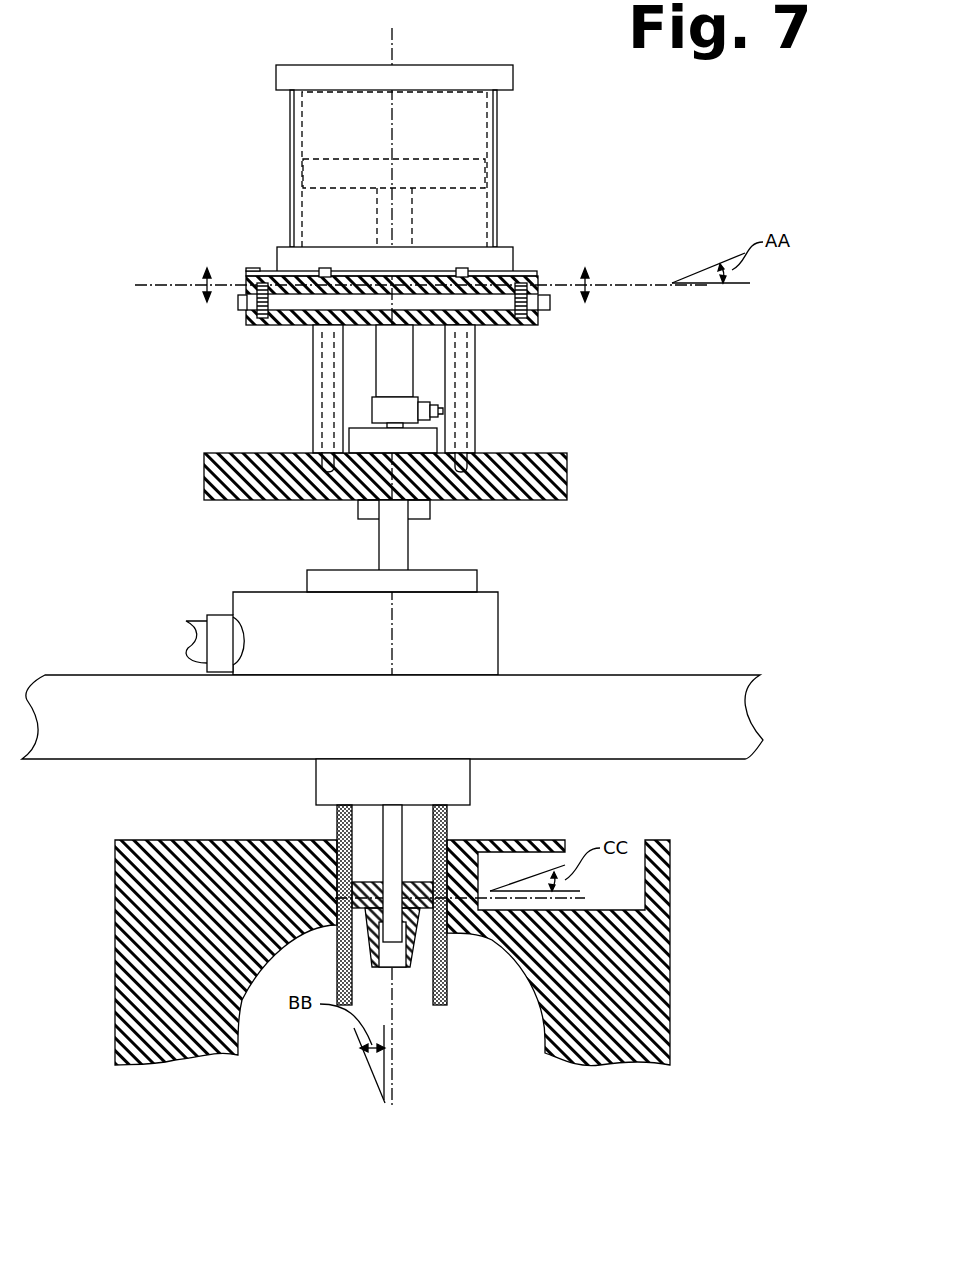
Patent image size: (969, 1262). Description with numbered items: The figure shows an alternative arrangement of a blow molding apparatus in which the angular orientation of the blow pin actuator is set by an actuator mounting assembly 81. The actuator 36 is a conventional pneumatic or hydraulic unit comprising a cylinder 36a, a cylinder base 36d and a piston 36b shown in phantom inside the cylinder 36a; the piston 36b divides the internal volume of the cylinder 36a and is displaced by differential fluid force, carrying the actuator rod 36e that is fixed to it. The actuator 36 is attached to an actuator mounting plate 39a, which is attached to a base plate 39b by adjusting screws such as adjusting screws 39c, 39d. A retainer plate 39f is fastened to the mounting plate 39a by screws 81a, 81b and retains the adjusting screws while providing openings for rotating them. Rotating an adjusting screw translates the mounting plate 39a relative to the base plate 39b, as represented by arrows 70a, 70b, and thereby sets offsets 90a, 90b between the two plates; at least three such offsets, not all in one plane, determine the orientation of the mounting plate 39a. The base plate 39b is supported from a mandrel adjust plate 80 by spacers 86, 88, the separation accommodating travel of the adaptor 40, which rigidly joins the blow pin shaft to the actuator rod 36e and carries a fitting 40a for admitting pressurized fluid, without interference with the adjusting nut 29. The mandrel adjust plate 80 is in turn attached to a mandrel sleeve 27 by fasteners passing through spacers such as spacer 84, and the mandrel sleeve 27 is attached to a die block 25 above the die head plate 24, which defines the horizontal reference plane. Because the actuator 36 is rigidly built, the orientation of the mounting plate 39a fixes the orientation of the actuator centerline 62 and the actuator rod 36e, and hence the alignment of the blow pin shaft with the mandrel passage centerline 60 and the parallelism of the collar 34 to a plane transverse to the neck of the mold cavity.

The axial centerline 62 is at (393, 64).
The actuator 36 is at (548, 61).
The cylinder 36a is at (394, 169).
The piston 36b is at (472, 181).
The cylinder base 36d is at (500, 255).
The actuator rod 36e is at (394, 361).
The actuator mounting assembly 81 is at (414, 266).
The screw 81a is at (462, 268).
The screw 81b is at (318, 268).
The actuator mounting plate 39a is at (538, 279).
The base plate 39b is at (524, 322).
The adjusting screw 39c is at (518, 282).
The adjusting screw 39d is at (262, 278).
The retainer plate 39f is at (264, 270).
The arrow 70a is at (588, 284).
The arrow 70b is at (204, 284).
The offset 90a is at (550, 303).
The offset 90b is at (238, 303).
The spacer 88 is at (322, 398).
The spacer 86 is at (466, 408).
The adaptor 40 is at (395, 412).
The fitting 40a is at (436, 408).
The adjusting nut 29 is at (393, 440).
The mandrel adjust plate 80 is at (555, 460).
The spacer 84 is at (392, 553).
The mandrel sleeve 27 is at (392, 581).
The die block 25 is at (342, 633).
The die head plate 24 is at (392, 717).
The collar 34 is at (422, 912).
The centerline 60 is at (393, 1008).